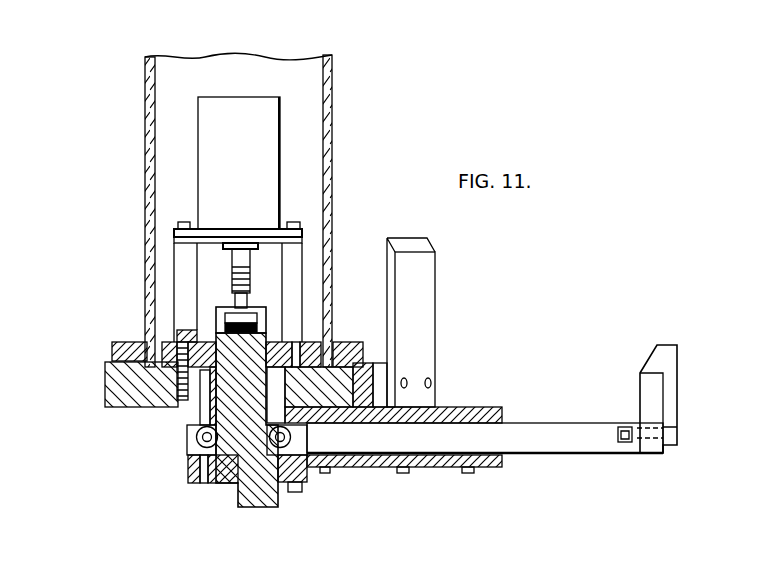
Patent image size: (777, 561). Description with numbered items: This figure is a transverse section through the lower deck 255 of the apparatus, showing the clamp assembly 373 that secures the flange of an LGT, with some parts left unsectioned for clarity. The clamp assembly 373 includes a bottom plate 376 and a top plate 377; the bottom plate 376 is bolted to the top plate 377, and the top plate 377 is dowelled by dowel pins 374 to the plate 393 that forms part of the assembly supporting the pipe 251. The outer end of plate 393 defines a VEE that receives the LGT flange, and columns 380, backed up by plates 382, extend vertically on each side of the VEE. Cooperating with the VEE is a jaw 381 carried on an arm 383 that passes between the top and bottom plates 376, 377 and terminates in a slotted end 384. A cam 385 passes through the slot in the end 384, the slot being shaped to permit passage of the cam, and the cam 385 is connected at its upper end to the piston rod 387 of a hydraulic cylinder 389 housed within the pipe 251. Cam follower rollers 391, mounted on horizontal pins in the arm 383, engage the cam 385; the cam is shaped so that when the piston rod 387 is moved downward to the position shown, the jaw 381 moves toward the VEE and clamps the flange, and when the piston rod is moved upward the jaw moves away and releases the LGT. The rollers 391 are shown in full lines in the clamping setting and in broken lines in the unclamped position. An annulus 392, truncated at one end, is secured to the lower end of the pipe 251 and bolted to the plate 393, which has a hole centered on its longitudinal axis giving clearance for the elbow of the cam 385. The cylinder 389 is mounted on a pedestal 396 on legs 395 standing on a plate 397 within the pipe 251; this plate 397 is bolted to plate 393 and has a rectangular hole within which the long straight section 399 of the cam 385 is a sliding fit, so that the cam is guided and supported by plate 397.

The pipe 251 is at (332, 100).
The lower deck 255 is at (565, 289).
The clamp assembly 373 is at (563, 462).
The dowel pins 374 is at (310, 344).
The bottom plate 376 is at (497, 467).
The top plate 377 is at (493, 407).
The columns 380 is at (422, 270).
The jaw 381 is at (653, 363).
The plates 382 is at (380, 377).
The arm 383 is at (553, 430).
The slotted end 384 is at (190, 428).
The cam 385 is at (252, 510).
The piston rod 387 is at (235, 262).
The hydraulic cylinder 389 is at (242, 110).
The cam follower rollers 391 is at (195, 447).
The annulus 392 is at (112, 348).
The plate 393 is at (380, 356).
The legs 395 is at (183, 253).
The pedestal 396 is at (267, 236).
The plate 397 is at (167, 341).
The long straight section 399 is at (220, 312).